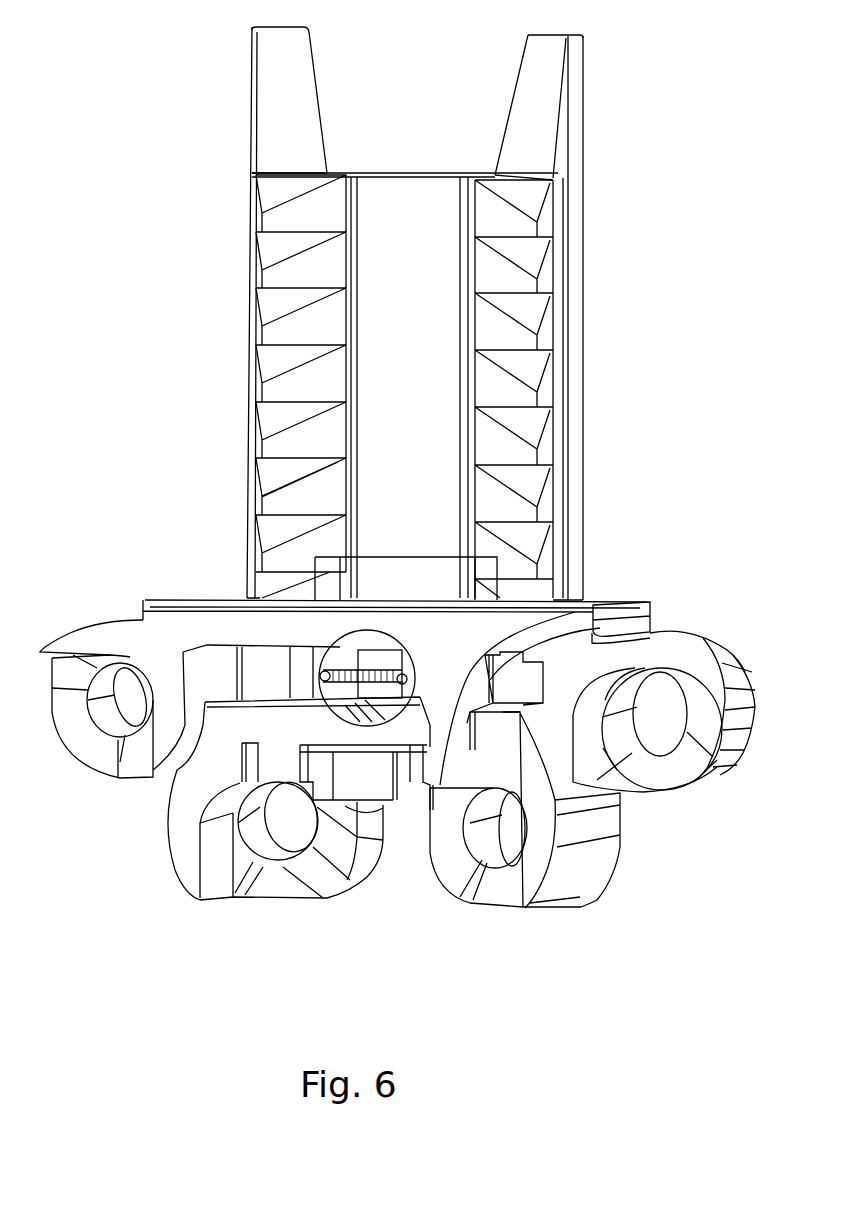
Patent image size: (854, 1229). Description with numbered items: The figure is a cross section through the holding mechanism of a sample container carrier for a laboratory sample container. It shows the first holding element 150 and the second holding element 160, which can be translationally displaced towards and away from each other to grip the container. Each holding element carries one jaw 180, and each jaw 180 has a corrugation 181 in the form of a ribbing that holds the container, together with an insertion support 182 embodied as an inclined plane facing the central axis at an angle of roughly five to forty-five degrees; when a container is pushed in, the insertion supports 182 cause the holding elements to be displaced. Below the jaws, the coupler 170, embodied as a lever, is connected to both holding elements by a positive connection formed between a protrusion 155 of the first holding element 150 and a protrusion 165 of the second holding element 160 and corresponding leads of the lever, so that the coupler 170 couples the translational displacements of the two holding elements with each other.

The first holding element 150 is at (583, 447).
The protrusion 155 is at (277, 770).
The second holding element 160 is at (150, 597).
The protrusion 165 is at (577, 610).
The coupler 170 is at (413, 785).
The jaw 180 is at (583, 207).
The corrugation 181 is at (277, 305).
The insertion support 182 is at (527, 89).